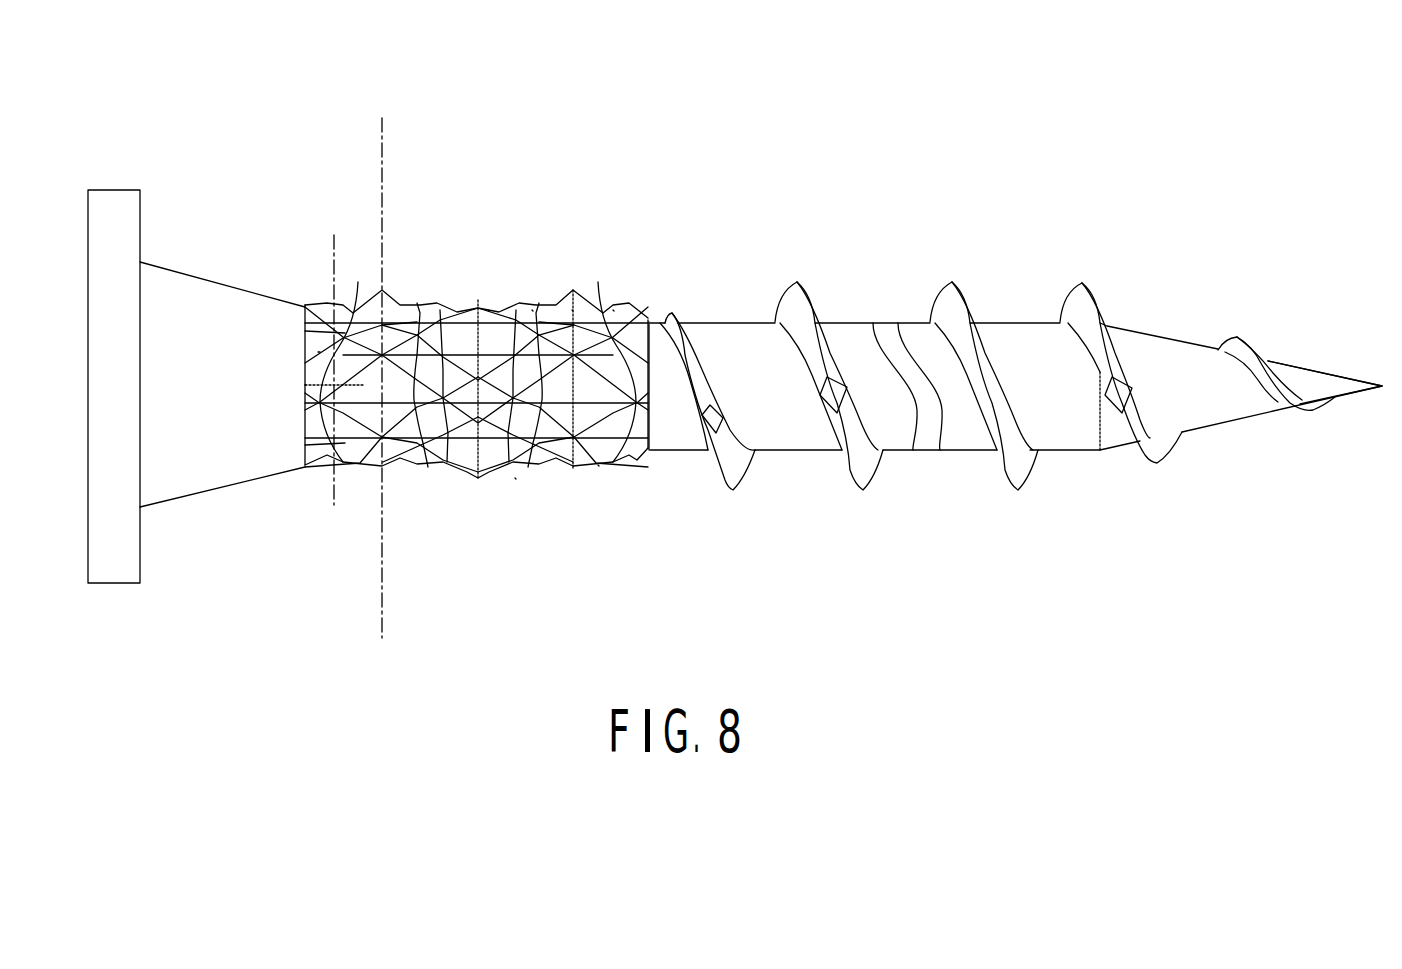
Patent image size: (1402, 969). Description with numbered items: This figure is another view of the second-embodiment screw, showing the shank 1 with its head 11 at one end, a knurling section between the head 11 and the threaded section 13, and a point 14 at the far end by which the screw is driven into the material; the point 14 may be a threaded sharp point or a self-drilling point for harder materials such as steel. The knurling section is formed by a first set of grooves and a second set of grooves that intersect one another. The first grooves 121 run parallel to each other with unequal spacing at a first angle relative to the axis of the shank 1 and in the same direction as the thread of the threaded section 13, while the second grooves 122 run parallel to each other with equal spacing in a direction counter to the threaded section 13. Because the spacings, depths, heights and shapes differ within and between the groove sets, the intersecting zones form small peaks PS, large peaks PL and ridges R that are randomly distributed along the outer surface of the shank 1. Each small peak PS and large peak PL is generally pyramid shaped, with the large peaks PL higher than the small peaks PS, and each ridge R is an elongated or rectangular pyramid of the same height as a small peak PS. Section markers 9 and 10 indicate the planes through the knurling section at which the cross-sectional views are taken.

The shank 1 is at (873, 177).
The head 11 is at (110, 192).
The threaded section 13 is at (955, 303).
The point 14 is at (1333, 373).
The first grooves 121 is at (358, 282).
The second grooves 122 is at (378, 468).
The ridges R is at (318, 352).
The large peaks PL is at (208, 540).
The small peaks PS is at (542, 597).
The section line 9- 9 is at (345, 613).
The section line 10- 10 is at (297, 492).